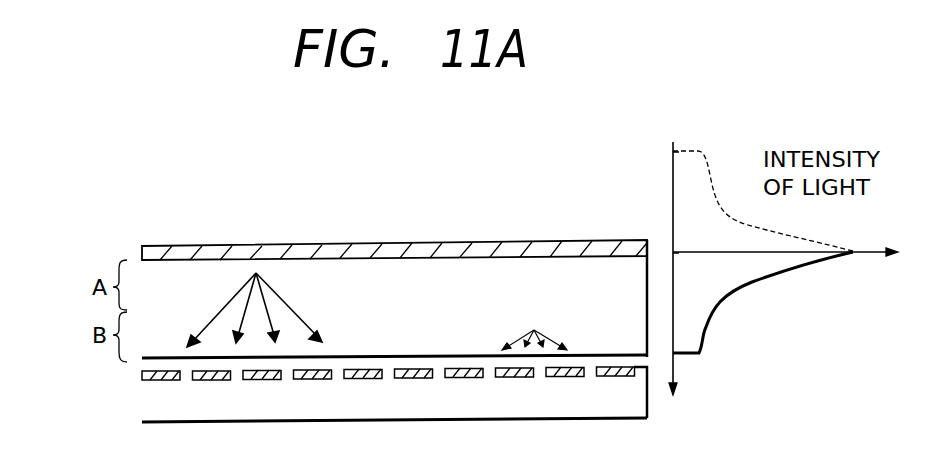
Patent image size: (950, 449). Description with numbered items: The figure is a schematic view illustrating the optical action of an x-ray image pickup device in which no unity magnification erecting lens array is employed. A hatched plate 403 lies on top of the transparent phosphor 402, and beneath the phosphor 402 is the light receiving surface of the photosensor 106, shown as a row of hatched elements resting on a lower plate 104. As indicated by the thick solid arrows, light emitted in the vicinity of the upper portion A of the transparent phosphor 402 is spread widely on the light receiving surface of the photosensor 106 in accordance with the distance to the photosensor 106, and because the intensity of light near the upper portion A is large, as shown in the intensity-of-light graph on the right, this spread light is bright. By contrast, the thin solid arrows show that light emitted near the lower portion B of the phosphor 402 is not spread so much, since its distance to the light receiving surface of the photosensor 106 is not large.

The upper plate 403 is at (172, 248).
The transparent phosphor 402 is at (230, 275).
The photosensor 106 is at (142, 378).
The substrate 104 is at (145, 402).